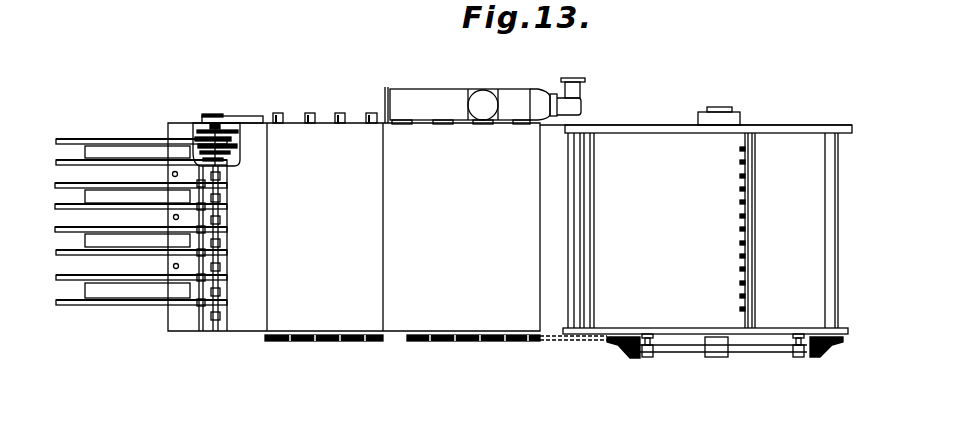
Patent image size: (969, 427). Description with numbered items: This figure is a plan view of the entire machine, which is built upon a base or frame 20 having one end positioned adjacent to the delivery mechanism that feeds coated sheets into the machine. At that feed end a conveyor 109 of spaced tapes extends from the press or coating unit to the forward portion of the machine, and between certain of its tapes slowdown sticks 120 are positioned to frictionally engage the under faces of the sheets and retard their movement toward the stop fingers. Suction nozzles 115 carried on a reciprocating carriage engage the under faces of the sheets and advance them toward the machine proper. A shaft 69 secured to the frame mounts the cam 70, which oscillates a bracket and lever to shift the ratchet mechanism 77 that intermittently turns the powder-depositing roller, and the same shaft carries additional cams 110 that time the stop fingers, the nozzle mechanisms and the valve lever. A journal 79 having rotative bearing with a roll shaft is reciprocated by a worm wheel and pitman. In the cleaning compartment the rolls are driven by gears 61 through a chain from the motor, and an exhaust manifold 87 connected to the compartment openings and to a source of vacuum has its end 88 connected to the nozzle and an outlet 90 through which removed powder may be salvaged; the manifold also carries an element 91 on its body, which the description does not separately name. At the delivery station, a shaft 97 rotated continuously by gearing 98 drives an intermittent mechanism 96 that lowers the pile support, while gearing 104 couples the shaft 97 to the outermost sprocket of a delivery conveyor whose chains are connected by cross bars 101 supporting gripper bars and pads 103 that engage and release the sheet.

The frame 20 is at (262, 332).
The gears 61 is at (457, 343).
The shaft 69 is at (232, 149).
The cam 70 is at (222, 122).
The ratchet mechanism 77 is at (248, 116).
The journal 79 is at (283, 113).
The manifold 87 is at (428, 97).
The manifold end 88 is at (581, 107).
The outlet 90 is at (576, 81).
The pump 91 is at (486, 102).
The intermittent mechanism 96 is at (718, 345).
The shaft 97 is at (768, 352).
The gearing 98 is at (636, 358).
The cross bars 101 is at (757, 232).
The gripper bars and pads 103 is at (741, 205).
The gearing 104 is at (822, 358).
The conveyor 109 is at (138, 140).
The cams 110 is at (232, 136).
The suction nozzles 115 is at (177, 170).
The slowdown sticks 120 is at (105, 200).